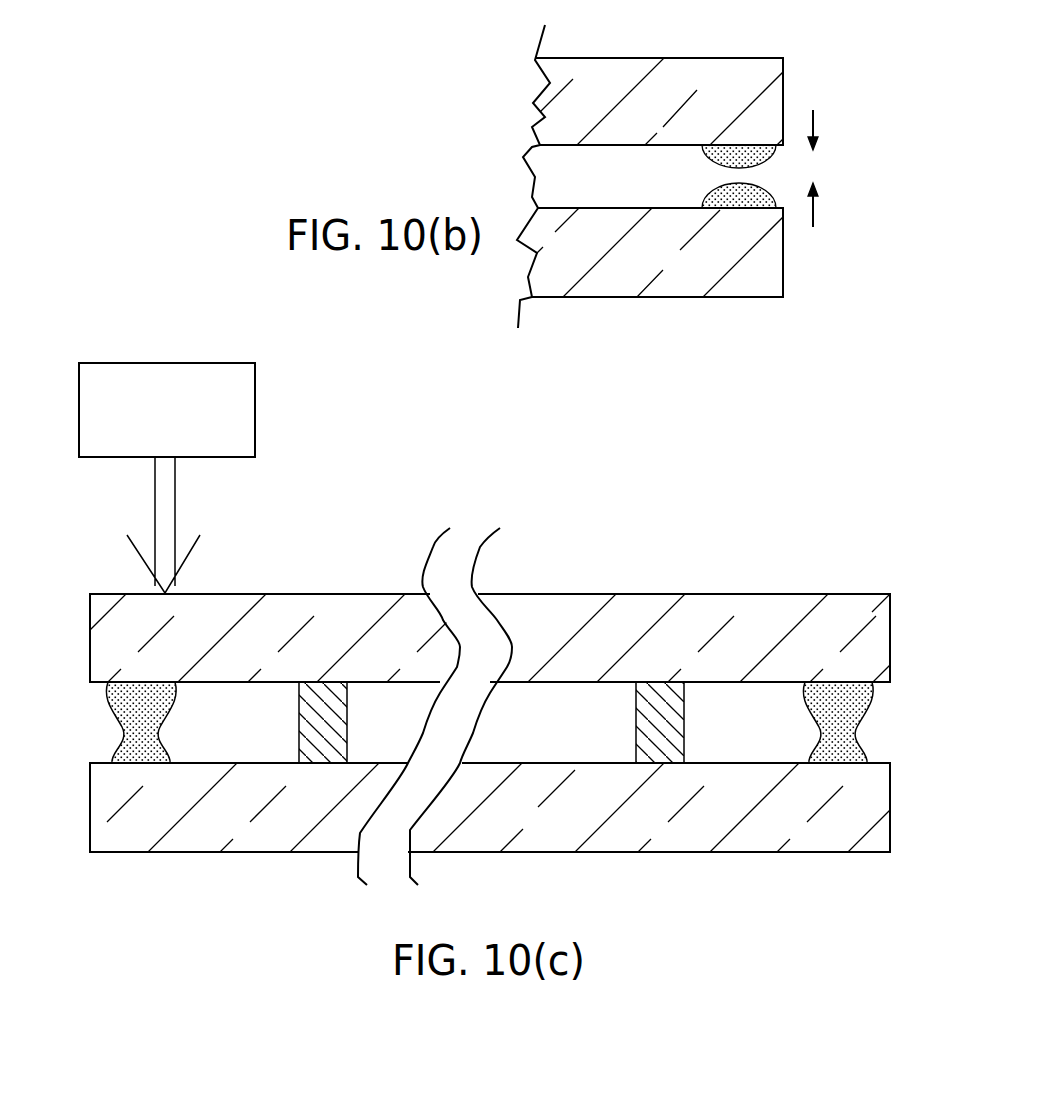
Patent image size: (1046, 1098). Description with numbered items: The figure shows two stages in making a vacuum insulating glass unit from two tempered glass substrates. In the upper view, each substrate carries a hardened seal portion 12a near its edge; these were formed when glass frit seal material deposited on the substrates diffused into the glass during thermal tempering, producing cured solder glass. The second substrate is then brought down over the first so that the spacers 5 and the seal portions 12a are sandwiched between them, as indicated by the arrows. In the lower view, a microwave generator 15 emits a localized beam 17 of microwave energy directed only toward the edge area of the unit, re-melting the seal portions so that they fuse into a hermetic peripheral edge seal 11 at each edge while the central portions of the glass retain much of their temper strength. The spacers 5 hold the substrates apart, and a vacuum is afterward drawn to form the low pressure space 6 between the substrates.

The spacers 5 is at (310, 700).
The low pressure space 6 is at (497, 743).
The hermetic peripheral edge seal 11 is at (140, 743).
The hardened seal portion 12a is at (768, 160).
The microwave generator 15 is at (255, 405).
The localized beam of microwave energy 17 is at (166, 500).